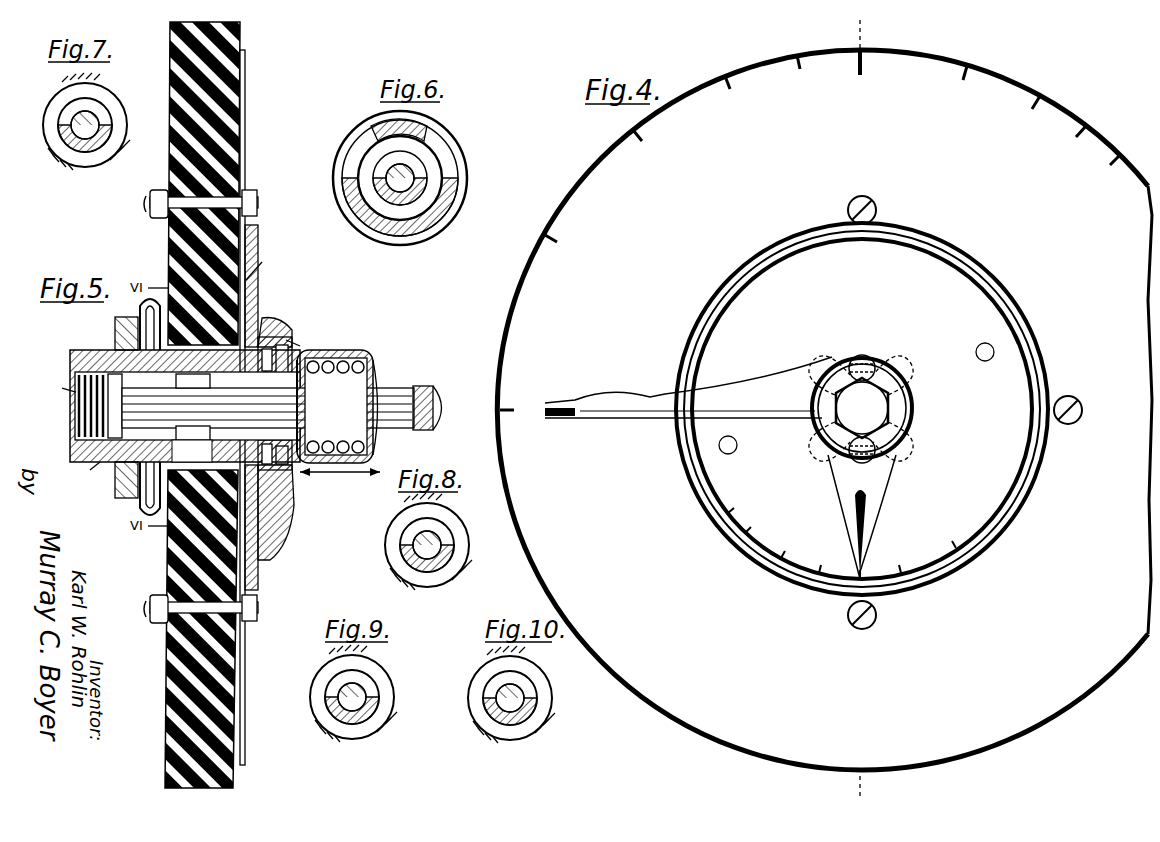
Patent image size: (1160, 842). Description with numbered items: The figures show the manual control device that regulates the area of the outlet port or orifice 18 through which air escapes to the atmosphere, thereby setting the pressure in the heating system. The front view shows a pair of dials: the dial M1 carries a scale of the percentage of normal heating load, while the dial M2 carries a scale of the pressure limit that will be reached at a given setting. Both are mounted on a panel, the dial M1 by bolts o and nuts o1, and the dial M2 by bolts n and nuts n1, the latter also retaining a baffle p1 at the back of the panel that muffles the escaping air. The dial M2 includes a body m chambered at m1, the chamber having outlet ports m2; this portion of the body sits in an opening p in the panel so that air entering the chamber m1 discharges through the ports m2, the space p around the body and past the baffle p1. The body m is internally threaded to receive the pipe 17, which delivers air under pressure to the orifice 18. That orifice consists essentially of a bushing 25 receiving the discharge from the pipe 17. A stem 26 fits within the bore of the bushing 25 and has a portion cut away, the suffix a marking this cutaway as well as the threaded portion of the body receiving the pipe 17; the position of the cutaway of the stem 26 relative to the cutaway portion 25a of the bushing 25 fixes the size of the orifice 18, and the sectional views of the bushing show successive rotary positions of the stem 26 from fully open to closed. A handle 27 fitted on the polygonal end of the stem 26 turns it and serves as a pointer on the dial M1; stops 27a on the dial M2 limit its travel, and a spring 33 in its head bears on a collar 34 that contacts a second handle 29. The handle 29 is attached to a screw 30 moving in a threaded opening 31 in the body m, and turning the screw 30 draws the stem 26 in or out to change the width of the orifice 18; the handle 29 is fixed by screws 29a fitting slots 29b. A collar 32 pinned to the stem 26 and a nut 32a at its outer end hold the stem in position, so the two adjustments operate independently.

In FIG. 4, the dial M1 is at (824, 415).
In FIG. 5, the dial M1 is at (244, 137).
In FIG. 4, the dial M2 is at (879, 412).
In FIG. 5, the dial M2 is at (258, 300).
In FIG. 6, the dial M2 is at (329, 263).
In FIG. 5, the pipe 17 is at (78, 398).
In FIG. 5, the outlet port or orifice 18 is at (193, 407).
In FIG. 5, the bushing 25 is at (130, 395).
In FIG. 7, the bushing 25 is at (62, 128).
In FIG. 6, the bushing 25 is at (392, 206).
In FIG. 8, the bushing 25 is at (402, 550).
In FIG. 9, the bushing 25 is at (328, 698).
In FIG. 10, the bushing 25 is at (526, 702).
In FIG. 5, the cutaway portion of bushing 25a is at (270, 260).
In FIG. 5, the stem 26 is at (272, 345).
In FIG. 7, the stem 26 is at (100, 125).
In FIG. 6, the stem 26 is at (410, 192).
In FIG. 8, the stem 26 is at (444, 547).
In FIG. 9, the stem 26 is at (368, 698).
In FIG. 10, the stem 26 is at (486, 704).
In FIG. 4, the operating handle or lever 27 is at (688, 387).
In FIG. 5, the operating handle or lever 27 is at (380, 455).
In FIG. 4, the stops 27a is at (870, 408).
In FIG. 4, the second handle or lever 29 is at (875, 488).
In FIG. 5, the second handle or lever 29 is at (280, 470).
In FIG. 4, the screws 29a is at (875, 362).
In FIG. 5, the screws 29a is at (300, 346).
In FIG. 4, the slots 29b is at (893, 383).
In FIG. 5, the slots 29b is at (272, 349).
In FIG. 5, the screw 30 is at (360, 352).
In FIG. 5, the threaded opening 31 is at (330, 360).
In FIG. 5, the collar 32 is at (80, 436).
In FIG. 4, the nut 32a is at (862, 408).
In FIG. 5, the nut 32a is at (430, 395).
In FIG. 5, the spring 33 is at (389, 404).
In FIG. 5, the collar 34 is at (300, 352).
In FIG. 5, the cutaway portion a is at (96, 490).
In FIG. 5, the body m is at (86, 470).
In FIG. 6, the body m is at (440, 222).
In FIG. 5, the chamber m1 is at (82, 466).
In FIG. 7, the chamber m1 is at (76, 150).
In FIG. 6, the chamber m1 is at (425, 196).
In FIG. 8, the chamber m1 is at (408, 572).
In FIG. 9, the chamber m1 is at (348, 724).
In FIG. 10, the chamber m1 is at (508, 725).
In FIG. 7, the outlet ports m2 is at (126, 100).
In FIG. 6, the outlet ports m2 is at (352, 160).
In FIG. 8, the outlet ports m2 is at (424, 541).
In FIG. 9, the outlet ports m2 is at (402, 666).
In FIG. 10, the outlet ports m2 is at (564, 670).
In FIG. 5, the bolts n is at (270, 318).
In FIG. 5, the nuts n1 is at (116, 322).
In FIG. 5, the bolts o is at (257, 202).
In FIG. 5, the nuts o1 is at (150, 194).
In FIG. 5, the opening p is at (112, 330).
In FIG. 6, the opening p is at (427, 128).
In FIG. 5, the baffle p1 is at (144, 304).